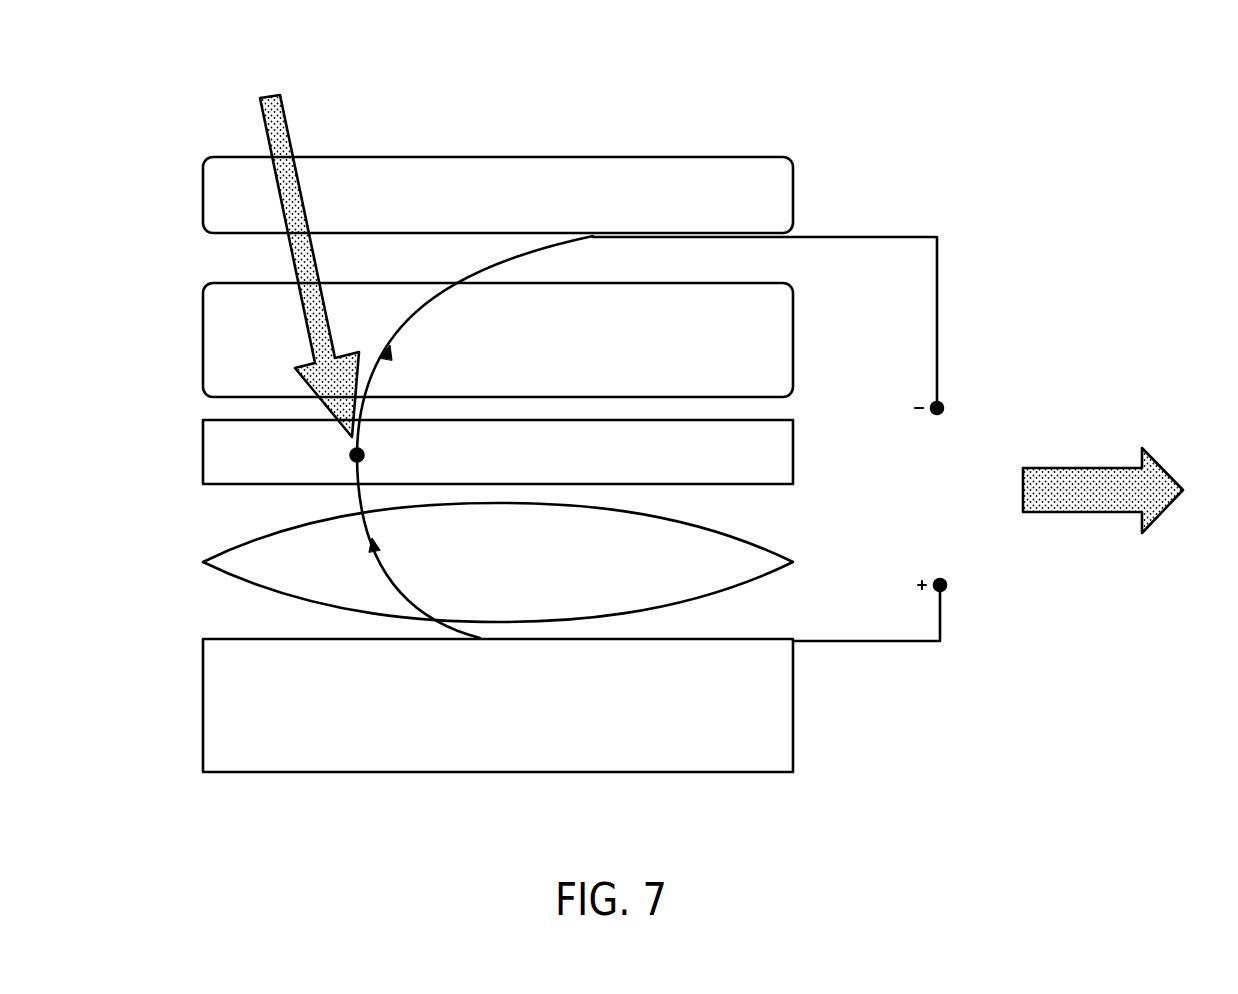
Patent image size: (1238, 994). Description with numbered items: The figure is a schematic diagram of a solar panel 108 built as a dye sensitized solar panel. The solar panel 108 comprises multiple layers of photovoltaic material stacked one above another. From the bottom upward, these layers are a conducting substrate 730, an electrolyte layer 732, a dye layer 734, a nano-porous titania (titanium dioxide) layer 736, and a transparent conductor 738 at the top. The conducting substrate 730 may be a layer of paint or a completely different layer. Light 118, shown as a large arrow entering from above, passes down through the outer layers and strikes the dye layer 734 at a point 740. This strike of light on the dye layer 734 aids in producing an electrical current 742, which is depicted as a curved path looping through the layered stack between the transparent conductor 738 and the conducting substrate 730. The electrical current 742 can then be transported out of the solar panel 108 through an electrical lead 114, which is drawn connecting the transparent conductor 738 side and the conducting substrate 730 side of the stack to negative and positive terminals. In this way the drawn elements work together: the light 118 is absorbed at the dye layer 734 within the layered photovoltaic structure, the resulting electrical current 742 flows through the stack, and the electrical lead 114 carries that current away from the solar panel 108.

The solar panel 108 is at (1008, 108).
The electrical lead 114 is at (855, 236).
The light 118 is at (271, 95).
The conducting substrate 730 is at (213, 700).
The electrolyte layer 732 is at (213, 561).
The dye layer 734 is at (213, 452).
The nano-porous titania layer 736 is at (213, 343).
The transparent conductor 738 is at (213, 190).
The light strike point 740 is at (364, 453).
The electrical current 742 is at (386, 357).